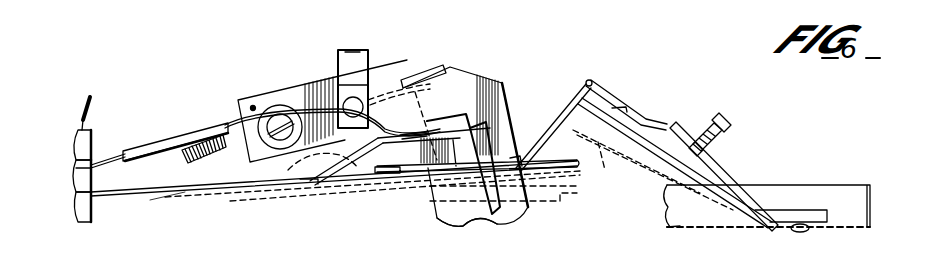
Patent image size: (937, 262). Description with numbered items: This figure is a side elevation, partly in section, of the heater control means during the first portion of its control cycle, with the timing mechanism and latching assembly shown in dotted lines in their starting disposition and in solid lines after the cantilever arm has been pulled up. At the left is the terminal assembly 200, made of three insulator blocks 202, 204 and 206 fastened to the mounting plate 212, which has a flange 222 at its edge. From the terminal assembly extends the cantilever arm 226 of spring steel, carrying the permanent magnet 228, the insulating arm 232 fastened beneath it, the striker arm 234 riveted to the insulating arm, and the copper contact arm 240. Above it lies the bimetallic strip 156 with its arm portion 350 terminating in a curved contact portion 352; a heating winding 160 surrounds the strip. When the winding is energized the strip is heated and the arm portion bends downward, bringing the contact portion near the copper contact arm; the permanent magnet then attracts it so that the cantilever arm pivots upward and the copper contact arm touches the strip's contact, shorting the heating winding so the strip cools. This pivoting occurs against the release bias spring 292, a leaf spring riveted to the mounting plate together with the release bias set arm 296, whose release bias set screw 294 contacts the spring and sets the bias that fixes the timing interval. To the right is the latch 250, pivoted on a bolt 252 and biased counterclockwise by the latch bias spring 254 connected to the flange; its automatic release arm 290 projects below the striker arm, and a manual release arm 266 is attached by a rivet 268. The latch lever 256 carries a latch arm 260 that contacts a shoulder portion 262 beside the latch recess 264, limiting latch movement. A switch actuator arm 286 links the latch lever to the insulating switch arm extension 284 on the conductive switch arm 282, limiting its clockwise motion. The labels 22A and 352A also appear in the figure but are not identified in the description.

The shaft 22A is at (186, 204).
The bimetallic strip 156 is at (102, 158).
The heating winding 160 is at (167, 142).
The terminal assembly 200 is at (95, 91).
The insulator block 202 is at (76, 207).
The insulator block 204 is at (76, 176).
The insulator block 206 is at (75, 141).
The mounting plate 212 is at (672, 232).
The flange 222 is at (848, 184).
The cantilever arm 226 is at (233, 205).
The permanent magnet 228 is at (398, 189).
The insulating arm 232 is at (350, 190).
The striker arm 234 is at (553, 175).
The copper contact arm 240 is at (296, 170).
The latch 250 is at (287, 88).
The bolt 252 is at (248, 152).
The latch bias spring 254 is at (205, 138).
The latch lever 256 is at (460, 233).
The latch arm 260 is at (448, 68).
The shoulder portion 262 is at (480, 84).
The latch recess 264 is at (425, 68).
The manual release arm 266 is at (356, 50).
The rivet 268 is at (340, 104).
The switch arm 282 is at (643, 117).
The switch arm extension 284 is at (612, 68).
The switch actuator arm 286 is at (573, 90).
The automatic release arm 290 is at (455, 219).
The release bias spring 292 is at (618, 139).
The release bias set screw 294 is at (716, 117).
The release bias set arm 296 is at (738, 175).
The arm portion 350 is at (253, 108).
The contact portion 352 is at (369, 120).
The cable housing 352A is at (492, 99).